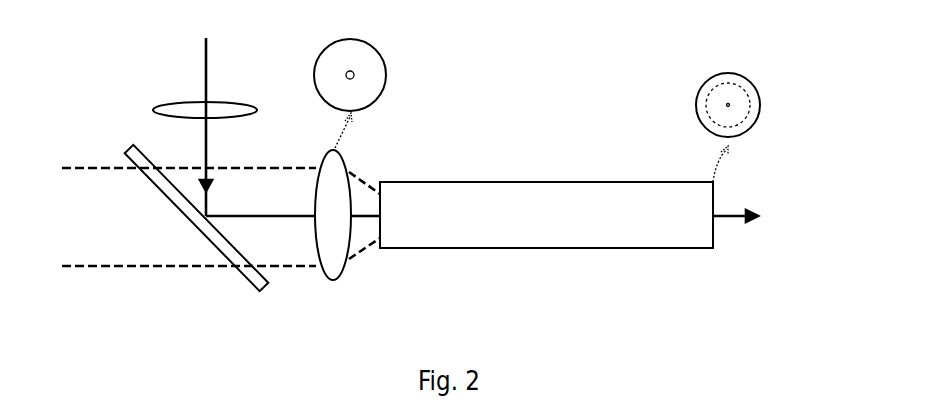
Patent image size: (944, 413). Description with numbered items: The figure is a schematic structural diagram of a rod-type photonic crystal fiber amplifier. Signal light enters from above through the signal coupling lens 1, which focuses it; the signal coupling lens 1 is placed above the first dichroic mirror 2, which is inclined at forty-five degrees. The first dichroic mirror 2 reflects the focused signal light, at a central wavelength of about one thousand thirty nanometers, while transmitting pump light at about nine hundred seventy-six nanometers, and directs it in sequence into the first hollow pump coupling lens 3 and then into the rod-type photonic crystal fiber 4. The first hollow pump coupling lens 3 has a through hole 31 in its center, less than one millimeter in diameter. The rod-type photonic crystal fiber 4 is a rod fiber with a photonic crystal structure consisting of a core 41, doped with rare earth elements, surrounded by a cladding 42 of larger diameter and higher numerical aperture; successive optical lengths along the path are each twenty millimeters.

The signal coupling lens 1 is at (180, 102).
The first dichroic mirror 2 is at (215, 253).
The first hollow pump coupling lens 3 is at (325, 266).
The through hole 31 is at (354, 75).
The rod-type photonic crystal fiber 4 is at (587, 249).
The core 41 is at (731, 105).
The cladding 42 is at (757, 85).